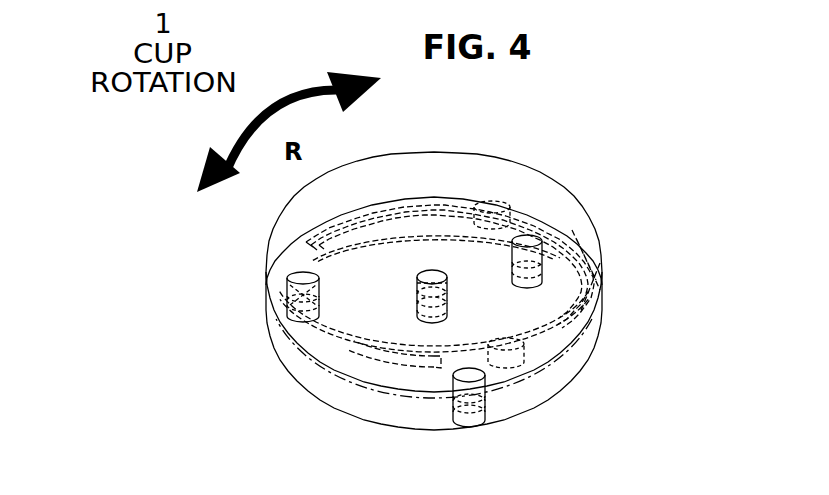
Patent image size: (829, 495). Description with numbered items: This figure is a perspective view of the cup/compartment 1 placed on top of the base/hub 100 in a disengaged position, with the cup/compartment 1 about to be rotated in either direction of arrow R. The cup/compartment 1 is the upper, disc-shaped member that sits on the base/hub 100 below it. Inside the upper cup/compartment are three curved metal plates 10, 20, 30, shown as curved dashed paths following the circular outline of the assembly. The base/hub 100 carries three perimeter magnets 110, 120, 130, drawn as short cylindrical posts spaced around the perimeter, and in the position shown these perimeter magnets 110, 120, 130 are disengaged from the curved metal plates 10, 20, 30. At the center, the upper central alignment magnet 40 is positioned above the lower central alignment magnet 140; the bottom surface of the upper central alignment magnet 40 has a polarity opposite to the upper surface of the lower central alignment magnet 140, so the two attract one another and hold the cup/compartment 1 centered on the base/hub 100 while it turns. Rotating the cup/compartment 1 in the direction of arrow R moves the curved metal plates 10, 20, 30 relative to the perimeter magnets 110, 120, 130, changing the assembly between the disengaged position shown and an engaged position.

The cup/compartment 1 is at (566, 207).
The curved metal plate 10 is at (388, 215).
The curved metal plate 20 is at (562, 317).
The curved metal plate 30 is at (340, 352).
The upper central alignment magnet 40 is at (434, 274).
The base/hub 100 is at (573, 365).
The perimeter magnet 110 is at (527, 240).
The perimeter magnet 120 is at (463, 378).
The perimeter magnet 130 is at (300, 276).
The lower central alignment magnet 140 is at (432, 318).